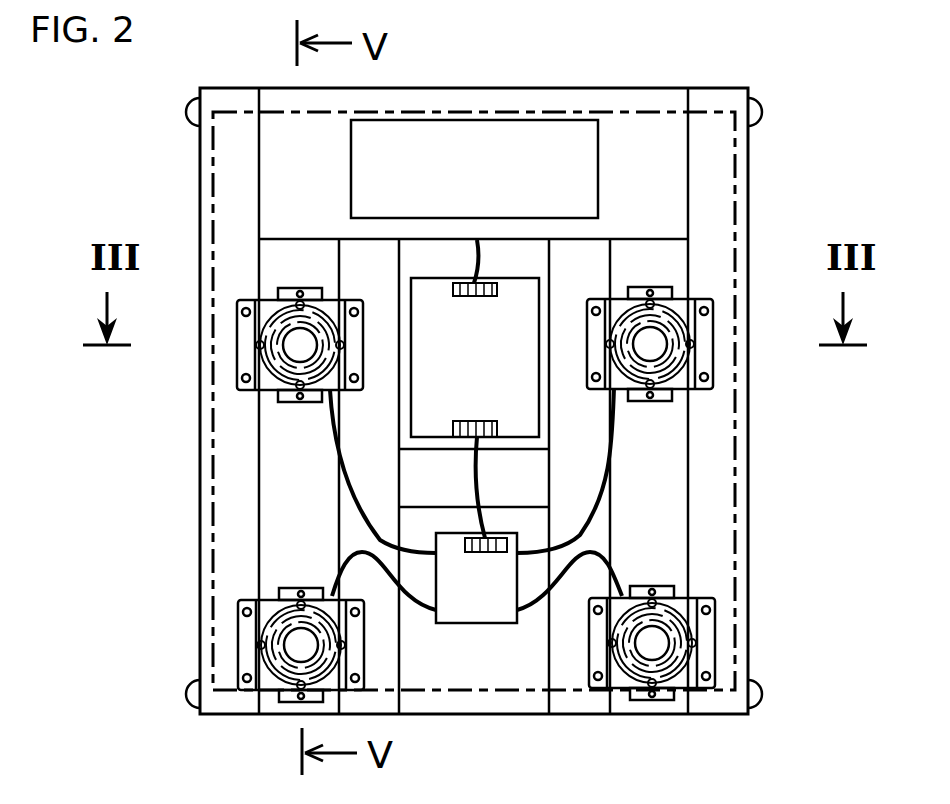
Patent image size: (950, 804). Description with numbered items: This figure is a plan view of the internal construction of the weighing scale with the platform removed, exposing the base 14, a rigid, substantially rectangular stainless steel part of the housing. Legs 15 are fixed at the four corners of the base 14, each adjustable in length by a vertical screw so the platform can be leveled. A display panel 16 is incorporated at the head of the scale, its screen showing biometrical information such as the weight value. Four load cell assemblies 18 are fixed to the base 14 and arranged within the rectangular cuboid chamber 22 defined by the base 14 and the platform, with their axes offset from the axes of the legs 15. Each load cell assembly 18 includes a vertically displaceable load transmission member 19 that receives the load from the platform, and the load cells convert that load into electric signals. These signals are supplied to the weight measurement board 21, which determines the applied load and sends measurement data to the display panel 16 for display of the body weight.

The base 14 is at (750, 198).
The leg 15 is at (193, 110).
The display panel 16 is at (465, 118).
The load cell assembly 18 is at (234, 363).
The load transmission member 19 is at (300, 345).
The weight measurement board 21 is at (474, 624).
The rectangular cuboid chamber 22 is at (620, 112).